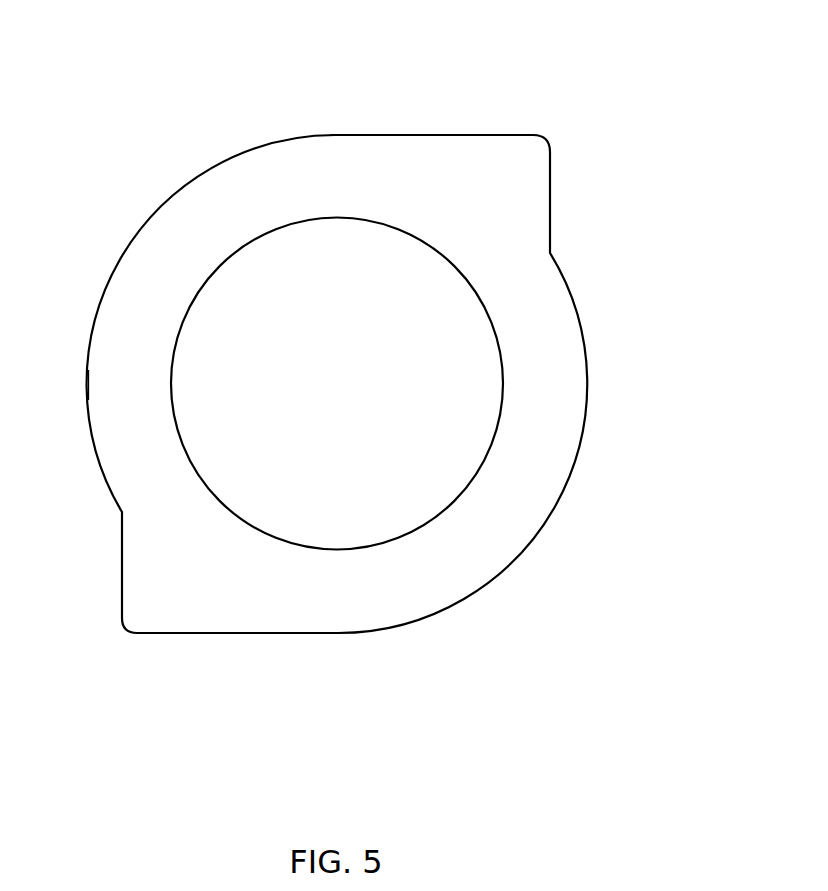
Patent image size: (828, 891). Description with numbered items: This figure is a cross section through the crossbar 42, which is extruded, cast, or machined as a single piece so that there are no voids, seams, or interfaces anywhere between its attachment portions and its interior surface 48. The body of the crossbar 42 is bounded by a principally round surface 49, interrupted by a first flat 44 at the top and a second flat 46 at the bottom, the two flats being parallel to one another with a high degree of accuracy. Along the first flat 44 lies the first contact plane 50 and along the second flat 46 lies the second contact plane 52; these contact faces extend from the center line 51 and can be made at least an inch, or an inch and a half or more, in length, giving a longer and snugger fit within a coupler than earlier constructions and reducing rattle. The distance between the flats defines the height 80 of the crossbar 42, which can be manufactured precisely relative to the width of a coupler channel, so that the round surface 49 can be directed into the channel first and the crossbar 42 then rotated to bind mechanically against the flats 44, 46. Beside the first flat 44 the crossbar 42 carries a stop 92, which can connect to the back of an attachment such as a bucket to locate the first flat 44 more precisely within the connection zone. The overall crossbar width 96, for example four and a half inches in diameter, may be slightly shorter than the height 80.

The crossbar 42 is at (118, 184).
The first flat 44 is at (437, 133).
The second flat 46 is at (240, 634).
The interior surface 48 is at (338, 548).
The round surface 49 is at (86, 387).
The first contact plane 50 is at (533, 84).
The center line 51 is at (337, 133).
The second contact plane 52 is at (348, 692).
The height 80 is at (617, 140).
The stop 92 is at (552, 203).
The crossbar width 96 is at (612, 722).